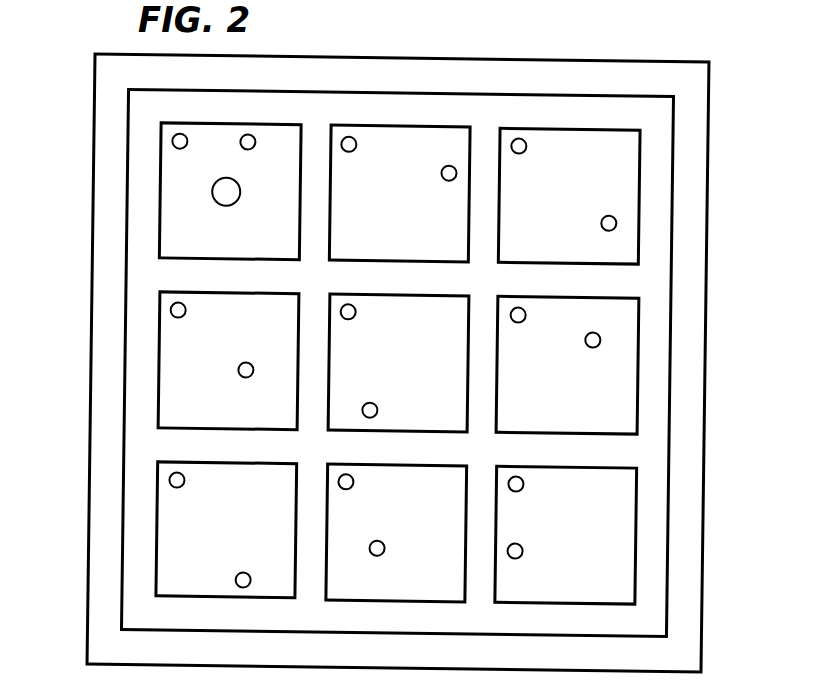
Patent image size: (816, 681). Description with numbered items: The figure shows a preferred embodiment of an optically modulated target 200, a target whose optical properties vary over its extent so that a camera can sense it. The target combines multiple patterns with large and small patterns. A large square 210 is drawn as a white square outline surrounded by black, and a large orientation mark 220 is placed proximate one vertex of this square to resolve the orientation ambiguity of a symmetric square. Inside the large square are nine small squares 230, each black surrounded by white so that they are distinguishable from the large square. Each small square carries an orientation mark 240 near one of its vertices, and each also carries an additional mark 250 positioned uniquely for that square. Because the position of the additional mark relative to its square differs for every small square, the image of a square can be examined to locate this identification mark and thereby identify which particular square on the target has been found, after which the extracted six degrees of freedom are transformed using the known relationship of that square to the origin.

The optically modulated target 200 is at (705, 342).
The square 210 is at (143, 222).
The large orientation mark 220 is at (226, 192).
The small squares 230 is at (158, 367).
The orientation mark 240 is at (178, 310).
The additional mark 250 is at (243, 581).